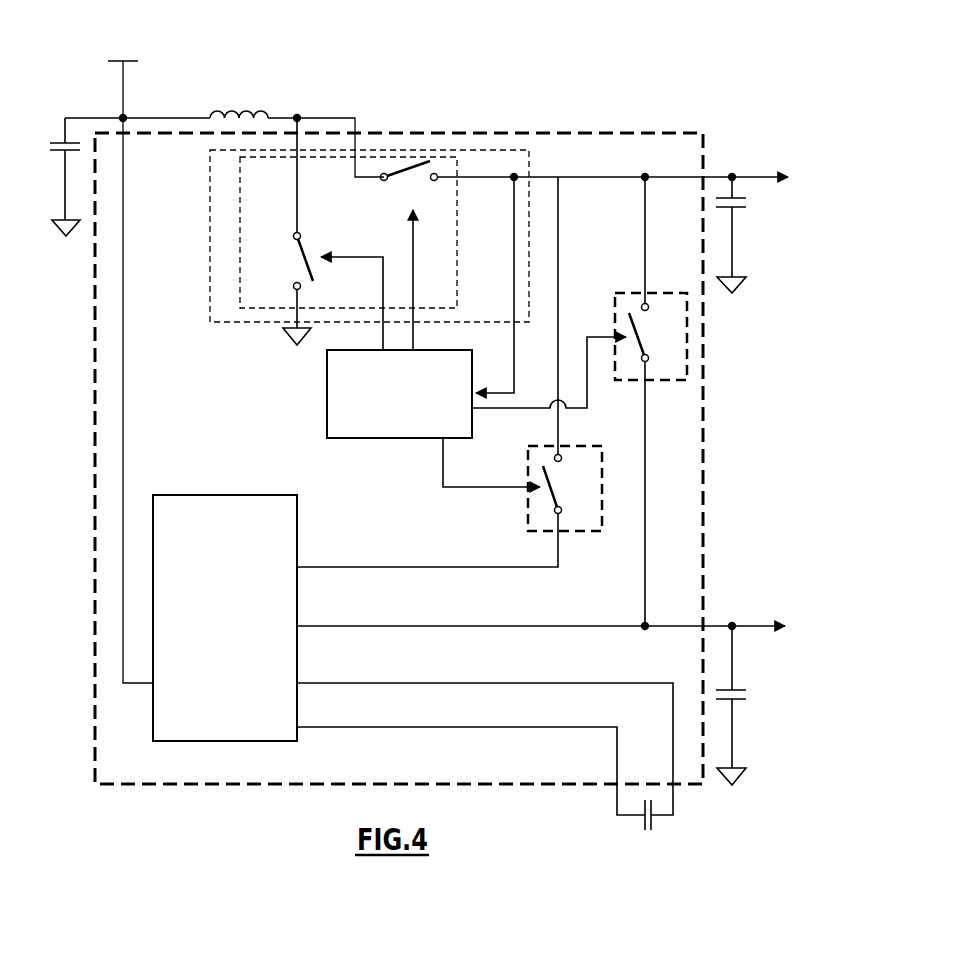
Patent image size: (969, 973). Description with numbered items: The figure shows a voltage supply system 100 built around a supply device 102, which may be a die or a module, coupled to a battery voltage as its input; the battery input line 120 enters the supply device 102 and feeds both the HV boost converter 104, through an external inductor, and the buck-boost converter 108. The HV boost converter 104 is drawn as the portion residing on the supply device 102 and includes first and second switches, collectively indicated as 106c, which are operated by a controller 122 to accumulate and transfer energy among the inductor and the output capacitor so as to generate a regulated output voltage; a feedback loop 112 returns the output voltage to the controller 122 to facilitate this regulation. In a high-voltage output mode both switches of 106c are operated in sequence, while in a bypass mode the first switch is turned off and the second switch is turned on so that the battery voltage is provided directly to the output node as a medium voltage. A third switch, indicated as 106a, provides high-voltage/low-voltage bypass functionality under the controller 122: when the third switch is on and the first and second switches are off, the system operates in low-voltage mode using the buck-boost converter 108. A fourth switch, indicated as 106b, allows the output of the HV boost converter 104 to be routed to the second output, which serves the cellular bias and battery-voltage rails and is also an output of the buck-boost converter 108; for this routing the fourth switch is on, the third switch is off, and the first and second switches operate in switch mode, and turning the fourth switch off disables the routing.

The voltage supply system 100 is at (430, 58).
The supply device 102 is at (449, 133).
The HV boost converter 104 is at (210, 295).
The bypass circuit 106a is at (528, 502).
The fourth switch 106b is at (628, 293).
The switches S1 and S2 106c is at (240, 205).
The buck-boost converter 108 is at (220, 495).
The feedback loop 112 is at (514, 272).
The battery voltage input line 120 is at (127, 380).
The controller 122 is at (395, 440).